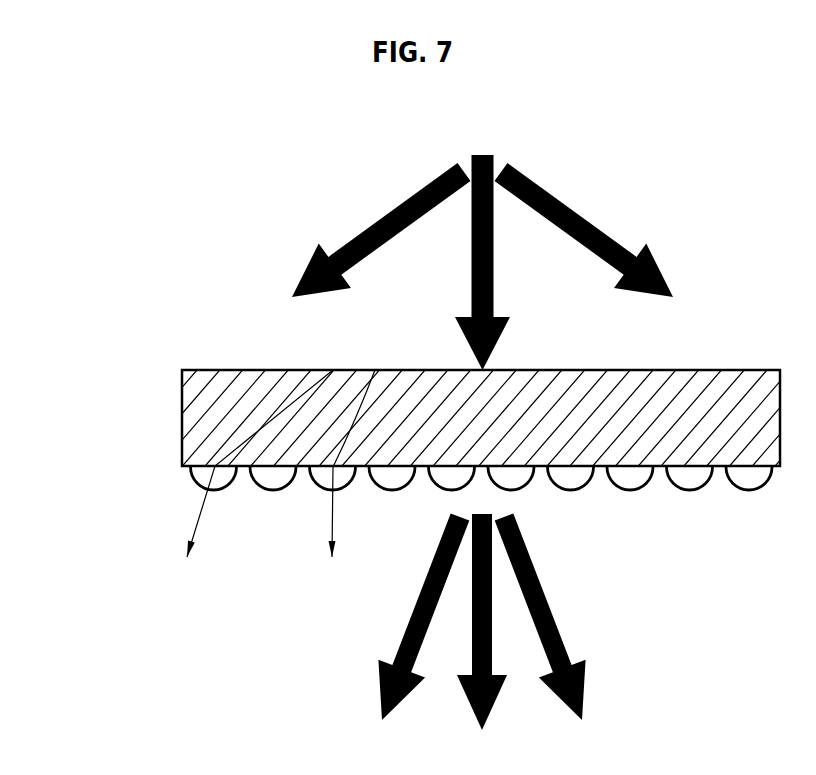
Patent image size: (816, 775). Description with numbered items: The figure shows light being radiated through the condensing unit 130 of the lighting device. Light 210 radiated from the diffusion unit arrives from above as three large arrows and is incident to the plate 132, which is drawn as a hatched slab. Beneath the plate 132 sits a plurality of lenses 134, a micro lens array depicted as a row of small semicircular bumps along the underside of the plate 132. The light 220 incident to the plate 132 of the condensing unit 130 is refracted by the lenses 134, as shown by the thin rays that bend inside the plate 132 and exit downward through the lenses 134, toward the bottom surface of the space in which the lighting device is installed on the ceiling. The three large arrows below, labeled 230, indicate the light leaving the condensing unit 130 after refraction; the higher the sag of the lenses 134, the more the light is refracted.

The condensing unit 130 is at (429, 430).
The plate 132 is at (197, 409).
The lenses 134 is at (190, 488).
The light 210 is at (585, 217).
The light 220 is at (273, 418).
The output light 230 is at (552, 612).